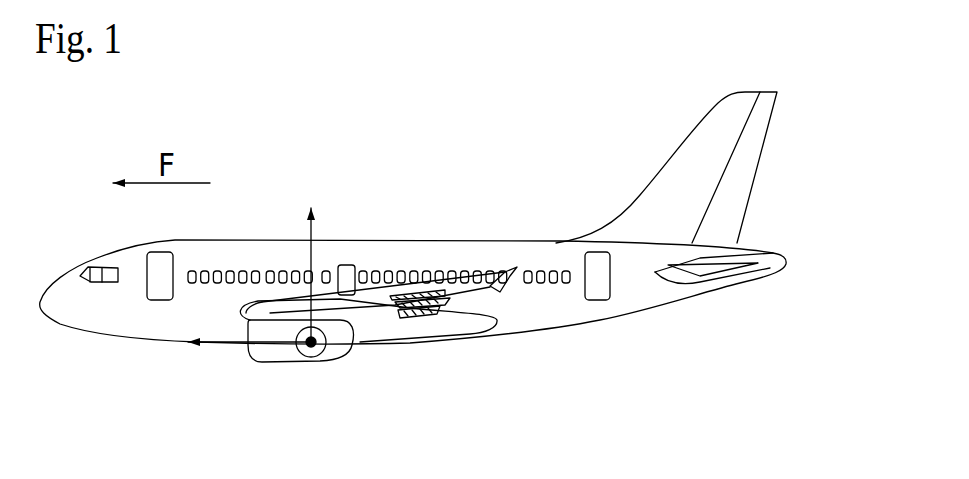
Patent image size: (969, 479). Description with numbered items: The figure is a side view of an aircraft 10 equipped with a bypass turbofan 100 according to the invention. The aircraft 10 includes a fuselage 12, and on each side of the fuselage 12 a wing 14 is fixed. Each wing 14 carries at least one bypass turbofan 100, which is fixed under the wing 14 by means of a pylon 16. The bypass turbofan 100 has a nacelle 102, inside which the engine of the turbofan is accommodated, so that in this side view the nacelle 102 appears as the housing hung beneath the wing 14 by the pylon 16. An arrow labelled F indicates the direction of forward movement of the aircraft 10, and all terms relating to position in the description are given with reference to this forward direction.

The aircraft 10 is at (544, 176).
The fuselage 12 is at (567, 312).
The wing 14 is at (410, 297).
The pylon 16 is at (362, 320).
The bypass turbofan 100 is at (222, 390).
The nacelle 102 is at (287, 342).